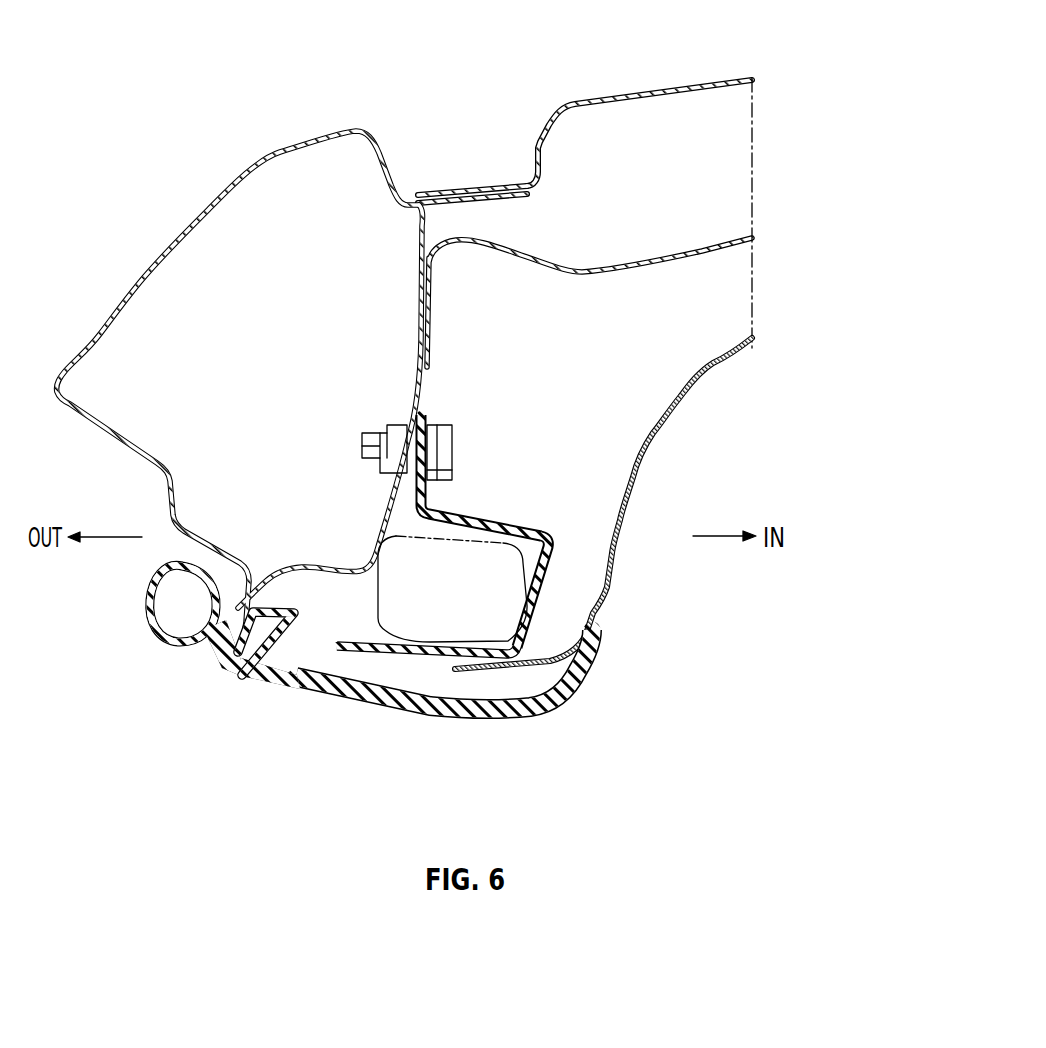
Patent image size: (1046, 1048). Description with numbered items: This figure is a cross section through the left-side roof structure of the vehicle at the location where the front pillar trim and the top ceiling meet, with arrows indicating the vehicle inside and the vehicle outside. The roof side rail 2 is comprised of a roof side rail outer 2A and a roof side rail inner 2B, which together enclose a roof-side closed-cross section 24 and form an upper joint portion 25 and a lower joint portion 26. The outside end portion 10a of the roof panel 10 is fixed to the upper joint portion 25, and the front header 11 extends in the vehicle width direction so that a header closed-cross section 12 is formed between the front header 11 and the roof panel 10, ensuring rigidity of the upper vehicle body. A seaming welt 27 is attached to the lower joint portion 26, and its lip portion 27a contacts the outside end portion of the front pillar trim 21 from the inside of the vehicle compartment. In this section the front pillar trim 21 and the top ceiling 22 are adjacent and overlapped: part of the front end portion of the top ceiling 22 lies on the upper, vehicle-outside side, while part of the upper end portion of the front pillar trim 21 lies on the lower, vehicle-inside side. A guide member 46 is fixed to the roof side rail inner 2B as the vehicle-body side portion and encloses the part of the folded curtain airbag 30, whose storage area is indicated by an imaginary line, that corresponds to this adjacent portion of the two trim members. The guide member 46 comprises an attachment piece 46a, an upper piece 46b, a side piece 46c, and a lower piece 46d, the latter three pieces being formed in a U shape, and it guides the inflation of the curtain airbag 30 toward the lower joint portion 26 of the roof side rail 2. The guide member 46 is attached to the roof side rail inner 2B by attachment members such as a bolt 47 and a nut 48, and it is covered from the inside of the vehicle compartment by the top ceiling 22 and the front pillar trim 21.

The roof side rail 2 is at (523, 524).
The roof side rail outer 2A is at (102, 308).
The roof side rail inner 2B is at (414, 294).
The roof panel 10 is at (693, 84).
The outside end portion of the roof panel 10a is at (447, 185).
The front header 11 is at (679, 255).
The header closed-cross section 12 is at (682, 194).
The front pillar trim 21 is at (378, 703).
The top ceiling 22 is at (662, 431).
The roof-side closed-cross section 24 is at (254, 342).
The upper joint portion 25 is at (494, 202).
The lower joint portion 26 is at (241, 640).
The seaming welt 27 is at (523, 524).
The lip portion 27a is at (278, 684).
The curtain airbag 30 is at (470, 533).
The guide member 46 is at (523, 524).
The attachment piece 46a is at (425, 412).
The upper piece 46b is at (496, 527).
The side piece 46c is at (558, 570).
The lower piece 46d is at (393, 653).
The bolt 47 is at (446, 431).
The nut 48 is at (390, 428).